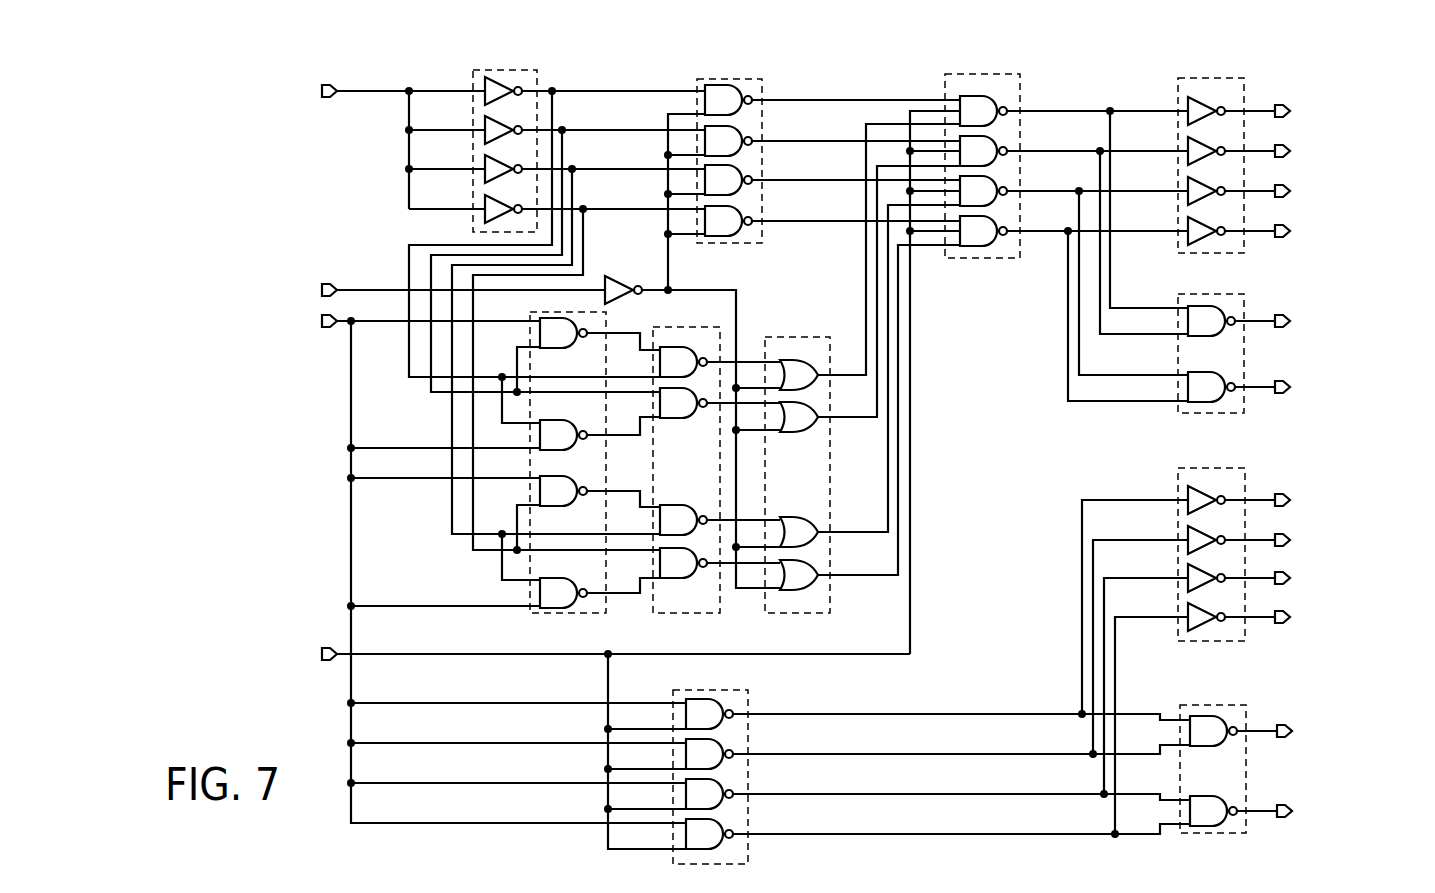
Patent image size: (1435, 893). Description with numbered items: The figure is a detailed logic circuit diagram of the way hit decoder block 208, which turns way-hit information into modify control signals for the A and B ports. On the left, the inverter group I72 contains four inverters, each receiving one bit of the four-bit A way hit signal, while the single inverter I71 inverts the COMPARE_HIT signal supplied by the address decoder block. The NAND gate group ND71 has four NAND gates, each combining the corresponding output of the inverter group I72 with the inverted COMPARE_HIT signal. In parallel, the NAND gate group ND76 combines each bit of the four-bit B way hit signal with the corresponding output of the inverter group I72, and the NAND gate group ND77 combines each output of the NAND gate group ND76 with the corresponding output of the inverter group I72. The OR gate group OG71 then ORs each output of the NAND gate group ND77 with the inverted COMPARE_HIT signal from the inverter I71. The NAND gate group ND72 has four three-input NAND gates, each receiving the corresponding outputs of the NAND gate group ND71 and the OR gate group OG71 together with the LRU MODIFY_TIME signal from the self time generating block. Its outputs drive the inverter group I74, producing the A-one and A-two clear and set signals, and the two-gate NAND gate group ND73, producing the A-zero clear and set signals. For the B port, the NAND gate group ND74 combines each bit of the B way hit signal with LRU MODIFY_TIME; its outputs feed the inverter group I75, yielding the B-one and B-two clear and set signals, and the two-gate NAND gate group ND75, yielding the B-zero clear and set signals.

The way hit decoder block 208 is at (1296, 71).
The inverter group I72 is at (500, 70).
The inverter I71 is at (619, 276).
The NAND gate group ND71 is at (706, 245).
The NAND gate group ND72 is at (985, 259).
The NAND gate group ND73 is at (1210, 294).
The NAND gate group ND74 is at (735, 690).
The NAND gate group ND75 is at (1250, 716).
The NAND gate group ND76 is at (538, 614).
The NAND gate group ND77 is at (684, 614).
The OR gate group OG71 is at (798, 614).
The inverter group I74 is at (1213, 78).
The inverter group I75 is at (1213, 468).